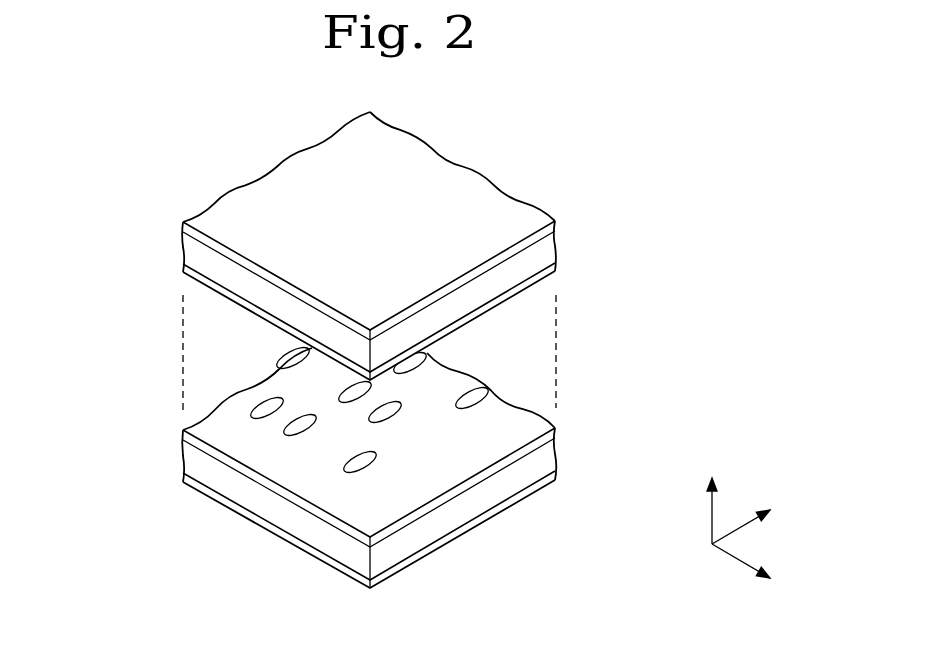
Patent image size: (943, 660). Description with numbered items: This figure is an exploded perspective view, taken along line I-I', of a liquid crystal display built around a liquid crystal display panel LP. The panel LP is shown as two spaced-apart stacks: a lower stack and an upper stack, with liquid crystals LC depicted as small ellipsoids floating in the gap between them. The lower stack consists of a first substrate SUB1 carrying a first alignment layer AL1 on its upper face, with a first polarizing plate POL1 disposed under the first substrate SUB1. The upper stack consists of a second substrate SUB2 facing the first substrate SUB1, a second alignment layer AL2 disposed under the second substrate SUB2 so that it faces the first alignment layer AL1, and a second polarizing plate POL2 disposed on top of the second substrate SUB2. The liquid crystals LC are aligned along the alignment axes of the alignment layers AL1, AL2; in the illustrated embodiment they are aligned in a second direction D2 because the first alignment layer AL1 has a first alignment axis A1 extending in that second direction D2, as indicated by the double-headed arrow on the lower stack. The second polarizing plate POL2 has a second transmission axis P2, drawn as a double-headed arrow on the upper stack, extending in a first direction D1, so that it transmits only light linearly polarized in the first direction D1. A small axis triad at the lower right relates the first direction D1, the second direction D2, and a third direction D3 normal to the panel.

The second polarizing plate POL2 is at (557, 228).
The second substrate SUB2 is at (557, 254).
The second alignment layer AL2 is at (557, 278).
The first alignment layer AL1 is at (557, 430).
The first substrate SUB1 is at (557, 455).
The first polarizing plate POL1 is at (557, 478).
The liquid crystals LC is at (272, 404).
The liquid crystal display panel LP is at (642, 245).
The second transmission axis P2 is at (298, 180).
The first alignment axis A1 is at (378, 512).
The line I-I' I is at (369, 406).
The first direction D1 is at (755, 574).
The second direction D2 is at (755, 517).
The third direction D3 is at (712, 498).